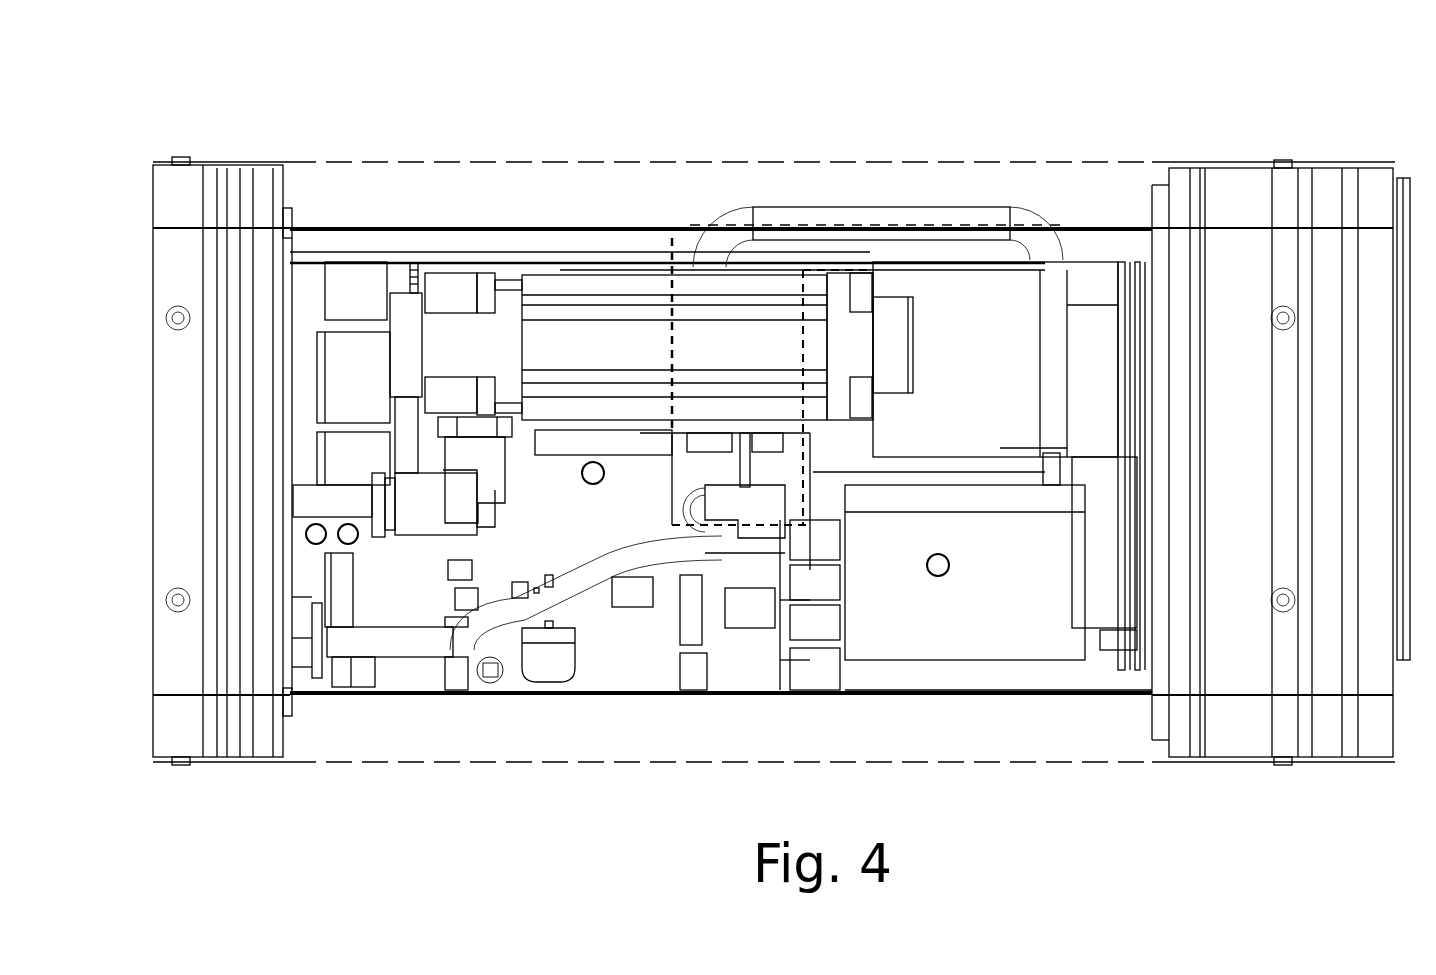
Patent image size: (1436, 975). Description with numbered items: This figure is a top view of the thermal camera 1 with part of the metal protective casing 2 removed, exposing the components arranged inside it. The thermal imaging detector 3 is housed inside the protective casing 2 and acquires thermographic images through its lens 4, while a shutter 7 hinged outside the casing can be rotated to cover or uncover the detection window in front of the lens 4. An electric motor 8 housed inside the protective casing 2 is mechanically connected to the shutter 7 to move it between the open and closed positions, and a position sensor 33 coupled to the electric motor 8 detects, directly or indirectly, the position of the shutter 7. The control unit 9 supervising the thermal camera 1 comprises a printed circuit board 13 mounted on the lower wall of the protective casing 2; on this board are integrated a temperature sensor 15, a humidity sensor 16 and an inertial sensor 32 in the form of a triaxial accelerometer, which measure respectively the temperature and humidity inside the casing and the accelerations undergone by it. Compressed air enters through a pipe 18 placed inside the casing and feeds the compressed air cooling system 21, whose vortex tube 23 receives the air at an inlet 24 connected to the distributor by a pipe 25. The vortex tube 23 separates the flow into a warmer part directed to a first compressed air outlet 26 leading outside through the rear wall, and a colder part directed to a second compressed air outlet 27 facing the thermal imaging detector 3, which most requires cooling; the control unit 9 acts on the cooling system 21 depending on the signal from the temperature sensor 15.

The thermal camera 1 is at (1288, 829).
The protective casing 2 is at (626, 790).
The thermal imaging detector 3 is at (967, 292).
The lens 4 is at (1140, 300).
The shutter 7 is at (1403, 178).
The electric motor 8 is at (1033, 593).
The control unit 9 is at (434, 740).
The printed circuit board 13 is at (517, 673).
The temperature sensor 15 is at (316, 534).
The humidity sensor 16 is at (349, 534).
The pipe 18 is at (362, 637).
The cooling system 21 is at (632, 172).
The vortex tube 23 is at (510, 340).
The inlet 24 is at (718, 497).
The pipe 25 is at (836, 220).
The first compressed air outlet 26 is at (422, 497).
The second compressed air outlet 27 is at (905, 335).
The inertial sensor 32 is at (593, 473).
The position sensor 33 is at (938, 576).